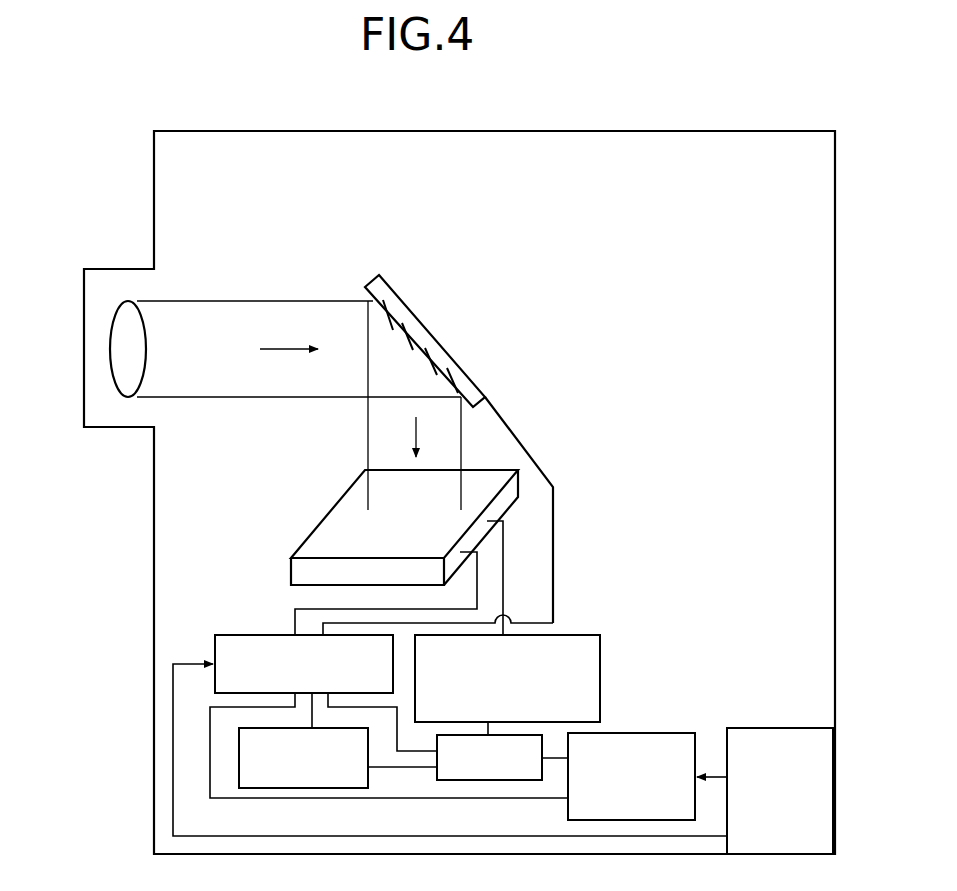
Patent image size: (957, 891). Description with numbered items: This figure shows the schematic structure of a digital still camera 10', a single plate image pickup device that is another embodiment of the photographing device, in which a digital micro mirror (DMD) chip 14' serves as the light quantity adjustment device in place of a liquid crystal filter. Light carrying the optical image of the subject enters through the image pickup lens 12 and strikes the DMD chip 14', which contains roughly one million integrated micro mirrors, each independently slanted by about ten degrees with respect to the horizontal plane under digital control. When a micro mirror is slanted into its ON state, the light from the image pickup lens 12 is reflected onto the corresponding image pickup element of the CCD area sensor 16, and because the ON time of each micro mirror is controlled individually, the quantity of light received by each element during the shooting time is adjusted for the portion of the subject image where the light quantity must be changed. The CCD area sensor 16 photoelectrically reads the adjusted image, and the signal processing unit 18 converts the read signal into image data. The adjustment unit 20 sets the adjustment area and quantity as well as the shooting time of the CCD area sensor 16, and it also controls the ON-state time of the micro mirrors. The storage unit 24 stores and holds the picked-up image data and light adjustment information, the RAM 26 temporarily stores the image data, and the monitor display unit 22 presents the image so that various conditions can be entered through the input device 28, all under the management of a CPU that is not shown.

The digital still camera 10' is at (436, 465).
The image pickup lens 12 is at (116, 300).
The DMD chip 14' is at (459, 449).
The CCD area sensor 16 is at (340, 503).
The signal processing unit 18 is at (588, 635).
The adjustment unit 20 is at (253, 635).
The monitor display unit 22 is at (650, 733).
The storage unit 24 is at (287, 788).
The RAM 26 is at (480, 781).
The input device 28 is at (775, 728).